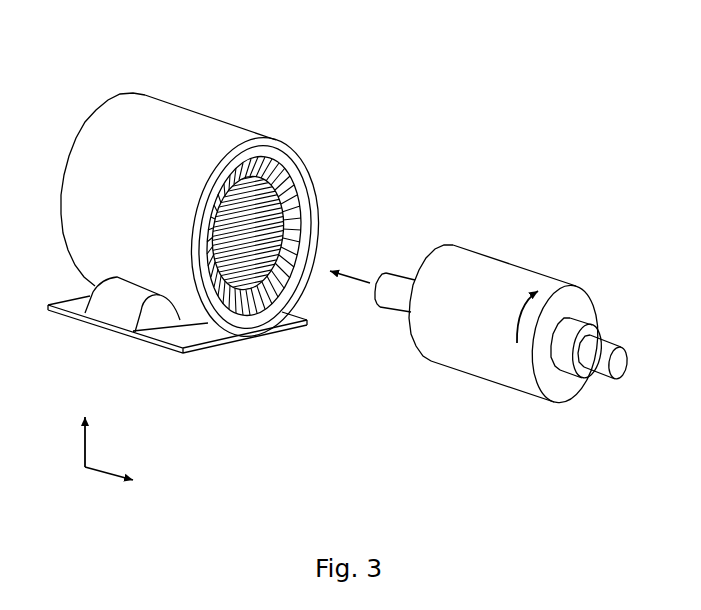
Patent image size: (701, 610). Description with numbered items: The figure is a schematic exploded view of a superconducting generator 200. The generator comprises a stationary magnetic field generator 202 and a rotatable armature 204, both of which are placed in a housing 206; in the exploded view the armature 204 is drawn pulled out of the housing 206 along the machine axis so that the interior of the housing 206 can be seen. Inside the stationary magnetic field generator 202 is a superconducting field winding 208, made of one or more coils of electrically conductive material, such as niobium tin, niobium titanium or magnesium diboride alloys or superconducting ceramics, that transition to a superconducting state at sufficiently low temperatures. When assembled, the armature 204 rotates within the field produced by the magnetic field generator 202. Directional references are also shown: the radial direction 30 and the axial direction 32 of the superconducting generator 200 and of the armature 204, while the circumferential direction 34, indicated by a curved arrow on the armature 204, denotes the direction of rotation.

The superconducting generator 200 is at (546, 68).
The magnetic field generator 202 is at (300, 212).
The armature 204 is at (590, 246).
The housing 206 is at (186, 110).
The superconducting field winding 208 is at (293, 187).
The circumferential direction 34 is at (527, 293).
The radial direction 30 is at (83, 445).
The axial direction 32 is at (107, 475).